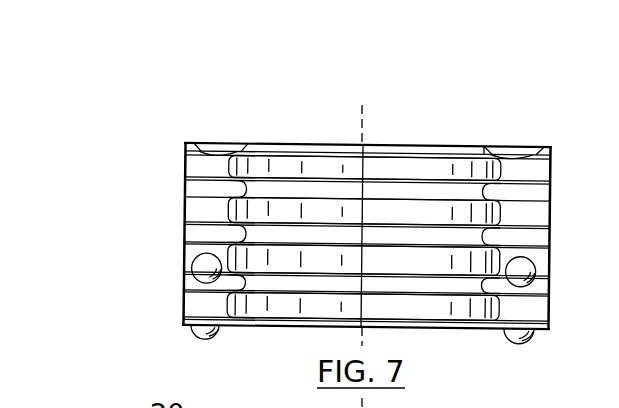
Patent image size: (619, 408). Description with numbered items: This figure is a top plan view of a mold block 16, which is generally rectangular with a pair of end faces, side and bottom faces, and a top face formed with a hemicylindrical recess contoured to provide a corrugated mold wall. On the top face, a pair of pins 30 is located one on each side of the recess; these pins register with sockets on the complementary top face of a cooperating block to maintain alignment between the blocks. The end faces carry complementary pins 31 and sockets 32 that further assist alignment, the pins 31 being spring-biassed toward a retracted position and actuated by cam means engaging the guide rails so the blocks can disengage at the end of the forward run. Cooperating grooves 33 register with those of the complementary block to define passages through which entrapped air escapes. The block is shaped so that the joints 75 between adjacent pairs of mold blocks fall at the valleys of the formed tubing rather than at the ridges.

The mold block 16 is at (172, 230).
The pins 30 is at (200, 270).
The pins 31 is at (197, 338).
The sockets 32 is at (213, 148).
The grooves 33 is at (183, 194).
The joints 75 is at (490, 147).